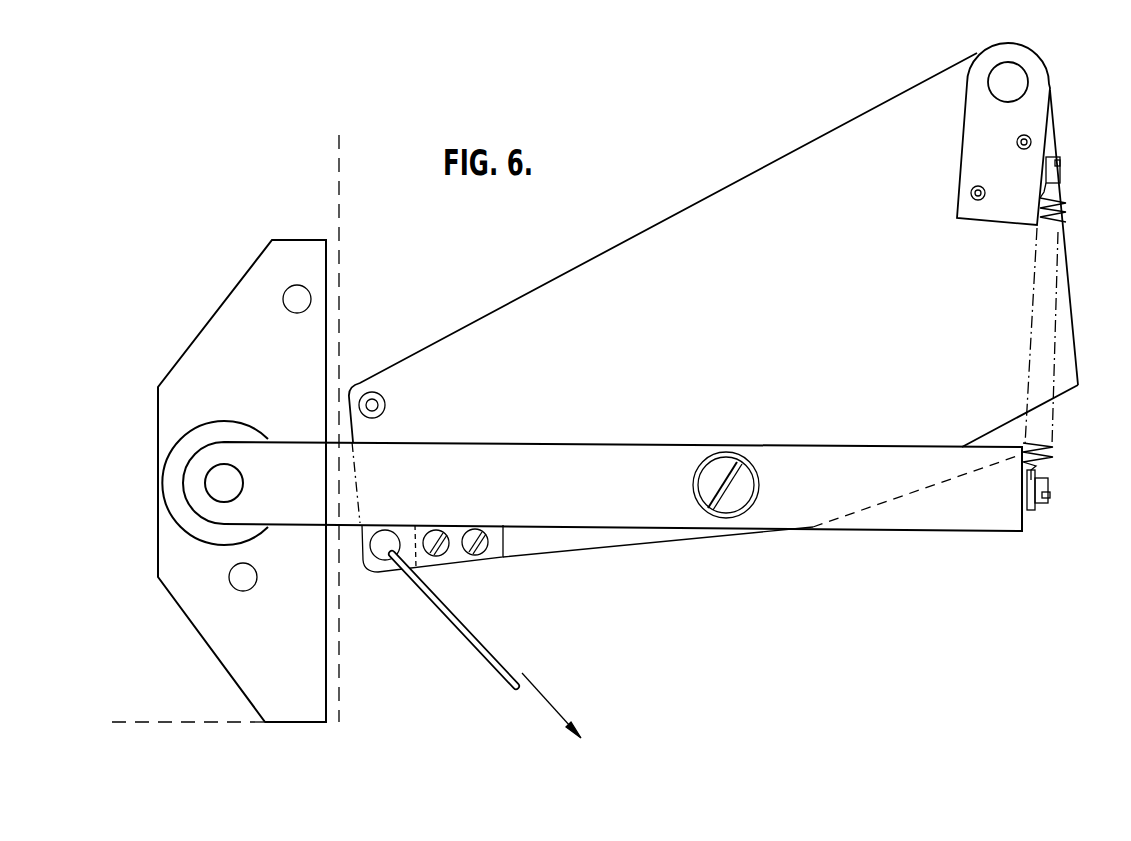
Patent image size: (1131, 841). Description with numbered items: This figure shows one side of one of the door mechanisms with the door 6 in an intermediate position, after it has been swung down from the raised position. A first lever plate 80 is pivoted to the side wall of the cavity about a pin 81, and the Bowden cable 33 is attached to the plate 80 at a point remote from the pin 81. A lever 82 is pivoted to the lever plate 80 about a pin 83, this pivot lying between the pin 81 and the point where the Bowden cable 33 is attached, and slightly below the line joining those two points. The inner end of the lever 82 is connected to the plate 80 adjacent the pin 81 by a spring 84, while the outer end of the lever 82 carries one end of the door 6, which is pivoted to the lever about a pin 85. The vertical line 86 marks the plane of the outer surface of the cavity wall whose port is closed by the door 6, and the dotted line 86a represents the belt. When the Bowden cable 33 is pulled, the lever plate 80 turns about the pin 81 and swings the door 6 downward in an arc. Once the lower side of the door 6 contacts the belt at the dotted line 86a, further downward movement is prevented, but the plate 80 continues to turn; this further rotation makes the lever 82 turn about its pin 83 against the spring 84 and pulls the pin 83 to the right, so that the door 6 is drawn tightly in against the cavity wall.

The door 6 is at (213, 316).
The Bowden cable 33 is at (450, 612).
The first lever plate 80 is at (905, 122).
The pin 81 is at (1008, 80).
The lever 82 is at (618, 477).
The pin 83 is at (740, 480).
The spring 84 is at (1062, 225).
The pin 85 is at (224, 483).
The vertical line 86 is at (338, 192).
The dotted line 86a is at (162, 720).